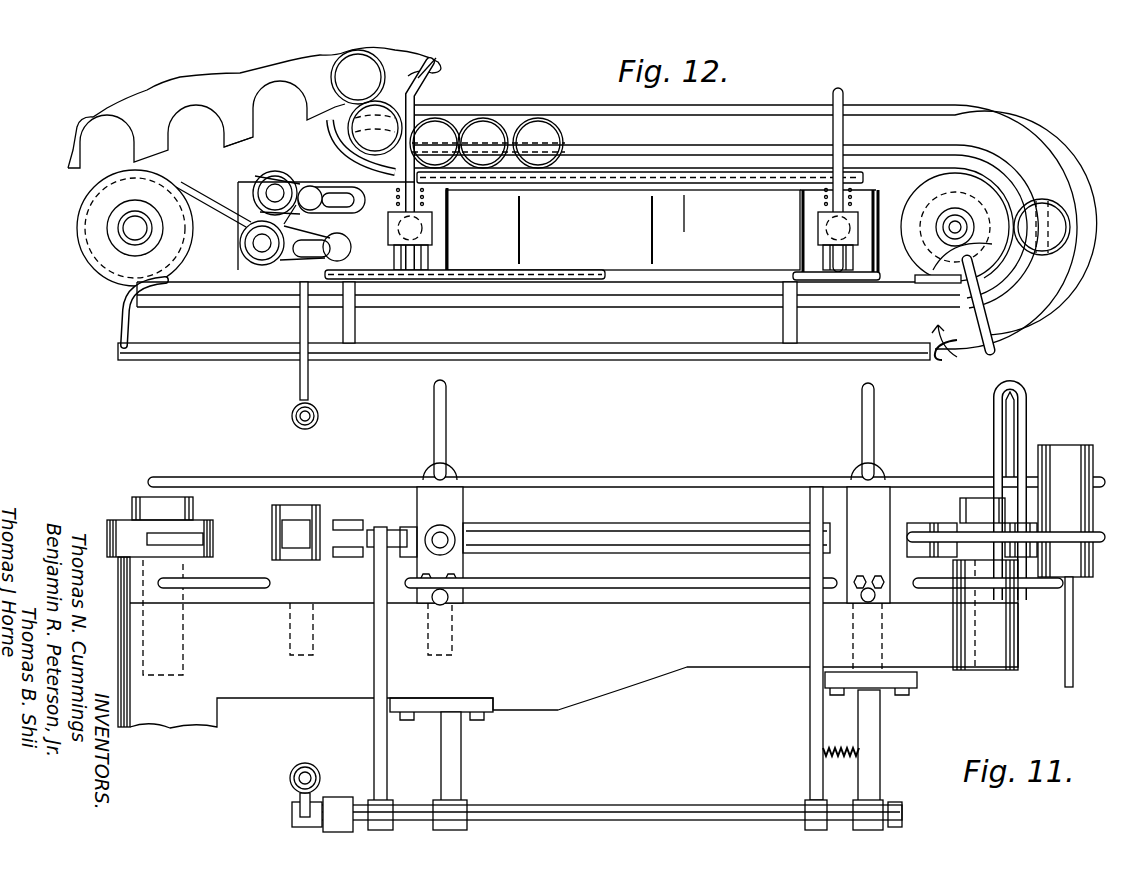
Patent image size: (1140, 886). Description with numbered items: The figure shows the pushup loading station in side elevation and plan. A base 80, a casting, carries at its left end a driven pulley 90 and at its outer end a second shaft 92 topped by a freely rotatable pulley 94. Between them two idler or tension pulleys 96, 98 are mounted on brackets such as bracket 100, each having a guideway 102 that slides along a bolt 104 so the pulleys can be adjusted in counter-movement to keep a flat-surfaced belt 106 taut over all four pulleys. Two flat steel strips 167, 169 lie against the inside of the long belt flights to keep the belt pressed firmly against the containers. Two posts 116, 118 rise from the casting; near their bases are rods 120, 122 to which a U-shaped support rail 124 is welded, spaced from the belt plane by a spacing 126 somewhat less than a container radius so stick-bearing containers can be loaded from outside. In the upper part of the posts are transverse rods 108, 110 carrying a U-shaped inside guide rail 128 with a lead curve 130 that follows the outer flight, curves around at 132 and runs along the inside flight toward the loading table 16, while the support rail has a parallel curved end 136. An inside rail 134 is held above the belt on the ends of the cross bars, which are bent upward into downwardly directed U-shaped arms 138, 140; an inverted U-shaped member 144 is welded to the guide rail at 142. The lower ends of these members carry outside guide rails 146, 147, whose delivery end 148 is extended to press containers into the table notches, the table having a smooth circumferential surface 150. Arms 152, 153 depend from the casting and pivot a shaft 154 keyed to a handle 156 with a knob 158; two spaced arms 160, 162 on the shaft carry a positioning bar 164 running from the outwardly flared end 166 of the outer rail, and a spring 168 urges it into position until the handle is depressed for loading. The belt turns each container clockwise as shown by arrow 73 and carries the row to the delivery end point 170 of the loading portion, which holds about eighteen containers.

In FIG. 12, the loading table 16 is at (70, 178).
In FIG. 12, the arrow 73 is at (1046, 217).
In FIG. 11, the base 80 is at (632, 668).
In FIG. 12, the pulley 90 is at (108, 266).
In FIG. 11, the second shaft 92 is at (984, 676).
In FIG. 12, the pulley 94 is at (915, 204).
In FIG. 11, the pulley 94 is at (947, 522).
In FIG. 12, the idler pulley 96 is at (252, 230).
In FIG. 12, the idler pulley 98 is at (265, 188).
In FIG. 12, the bracket 100 is at (345, 220).
In FIG. 12, the guideway 102 is at (331, 192).
In FIG. 12, the bolt 104 is at (305, 188).
In FIG. 12, the belt 106 is at (240, 242).
In FIG. 11, the belt 106 is at (255, 530).
In FIG. 12, the transverse rod 108 is at (446, 202).
In FIG. 12, the transverse rod 110 is at (835, 200).
In FIG. 12, the post 116 is at (434, 238).
In FIG. 11, the post 116 is at (460, 474).
In FIG. 12, the post 118 is at (822, 230).
In FIG. 11, the post 118 is at (855, 475).
In FIG. 11, the rod 120 is at (444, 602).
In FIG. 11, the rod 122 is at (872, 600).
In FIG. 12, the support rail 124 is at (668, 300).
In FIG. 11, the support rail 124 is at (593, 580).
In FIG. 11, the spacing 126 is at (1062, 604).
In FIG. 12, the inside guide rail 128 is at (553, 281).
In FIG. 12, the lead curve 130 is at (124, 328).
In FIG. 12, the curve 132 is at (945, 284).
In FIG. 12, the inside rail 134 is at (338, 129).
In FIG. 11, the inside rail 134 is at (936, 477).
In FIG. 12, the curved end 136 is at (344, 100).
In FIG. 12, the U-shaped arm 138 is at (416, 102).
In FIG. 11, the U-shaped arm 138 is at (448, 412).
In FIG. 12, the U-shaped arm 140 is at (846, 95).
In FIG. 11, the U-shaped arm 140 is at (862, 414).
In FIG. 11, the weld point 142 is at (995, 472).
In FIG. 12, the U-shaped member 144 is at (997, 339).
In FIG. 11, the U-shaped member 144 is at (1027, 414).
In FIG. 12, the outside guide rail 146 is at (1045, 140).
In FIG. 11, the outside guide rail 146 is at (1103, 478).
In FIG. 11, the outside guide rail 147 is at (1102, 543).
In FIG. 12, the delivery end 148 is at (428, 72).
In FIG. 12, the circumferential surface 150 is at (226, 152).
In FIG. 11, the arm 152 is at (462, 757).
In FIG. 11, the arm 153 is at (883, 746).
In FIG. 11, the shaft 154 is at (620, 805).
In FIG. 12, the handle 156 is at (300, 380).
In FIG. 11, the handle 156 is at (297, 798).
In FIG. 12, the knob 158 is at (292, 412).
In FIG. 11, the knob 158 is at (299, 762).
In FIG. 12, the arm 160 is at (356, 324).
In FIG. 11, the arm 160 is at (374, 722).
In FIG. 12, the arm 162 is at (798, 324).
In FIG. 11, the arm 162 is at (810, 726).
In FIG. 12, the positioning bar 164 is at (642, 358).
In FIG. 11, the positioning bar 164 is at (640, 535).
In FIG. 12, the outwardly flared end 166 is at (935, 358).
In FIG. 12, the steel strip 167 is at (684, 232).
In FIG. 11, the spring 168 is at (870, 758).
In FIG. 12, the steel strip 169 is at (615, 186).
In FIG. 12, the delivery end point 170 is at (956, 352).